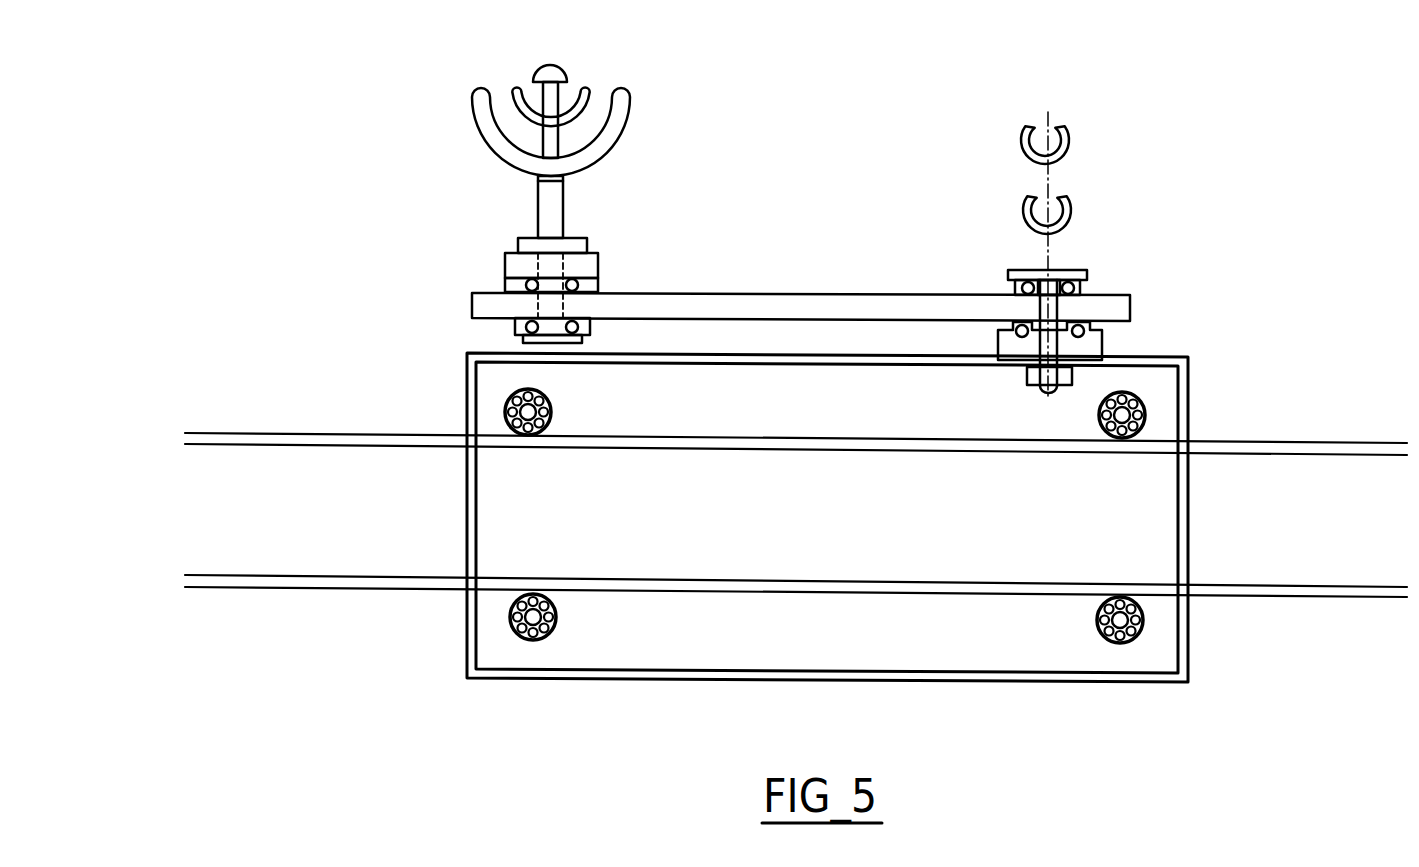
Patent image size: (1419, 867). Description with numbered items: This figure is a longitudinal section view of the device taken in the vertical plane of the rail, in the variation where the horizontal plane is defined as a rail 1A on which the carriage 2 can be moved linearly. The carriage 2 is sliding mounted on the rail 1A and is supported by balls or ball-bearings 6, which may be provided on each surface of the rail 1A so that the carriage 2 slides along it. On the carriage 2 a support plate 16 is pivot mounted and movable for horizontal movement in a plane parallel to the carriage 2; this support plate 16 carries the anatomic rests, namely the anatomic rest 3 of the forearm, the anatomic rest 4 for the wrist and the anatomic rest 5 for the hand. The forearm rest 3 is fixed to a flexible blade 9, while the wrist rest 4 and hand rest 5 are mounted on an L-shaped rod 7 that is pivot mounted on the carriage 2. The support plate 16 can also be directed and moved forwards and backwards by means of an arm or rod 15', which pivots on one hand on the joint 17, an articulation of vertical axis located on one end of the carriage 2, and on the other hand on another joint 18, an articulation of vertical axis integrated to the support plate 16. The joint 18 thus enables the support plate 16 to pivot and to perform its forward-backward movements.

The rail 1A is at (330, 519).
The carriage 2 is at (841, 649).
The anatomic rest of the forearm 3 is at (620, 98).
The anatomic rest for the wrist 4 is at (583, 93).
The anatomic rest for the hand 5 is at (560, 65).
The ball-bearings 6 is at (513, 630).
The L-shaped rod 7 is at (537, 98).
The flexible blade 9 is at (563, 202).
The arm or rod 15' is at (801, 271).
The support plate 16 is at (588, 248).
The joint 17 is at (1088, 292).
The joint 18 is at (502, 285).